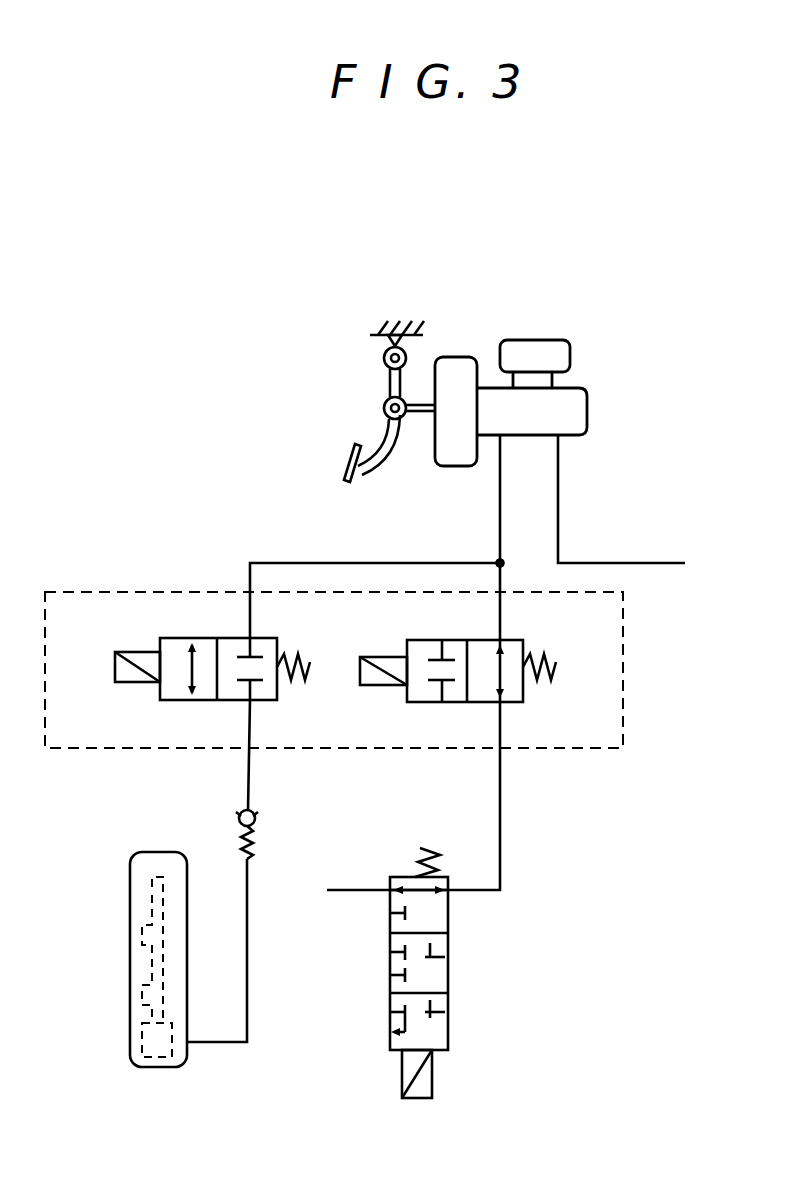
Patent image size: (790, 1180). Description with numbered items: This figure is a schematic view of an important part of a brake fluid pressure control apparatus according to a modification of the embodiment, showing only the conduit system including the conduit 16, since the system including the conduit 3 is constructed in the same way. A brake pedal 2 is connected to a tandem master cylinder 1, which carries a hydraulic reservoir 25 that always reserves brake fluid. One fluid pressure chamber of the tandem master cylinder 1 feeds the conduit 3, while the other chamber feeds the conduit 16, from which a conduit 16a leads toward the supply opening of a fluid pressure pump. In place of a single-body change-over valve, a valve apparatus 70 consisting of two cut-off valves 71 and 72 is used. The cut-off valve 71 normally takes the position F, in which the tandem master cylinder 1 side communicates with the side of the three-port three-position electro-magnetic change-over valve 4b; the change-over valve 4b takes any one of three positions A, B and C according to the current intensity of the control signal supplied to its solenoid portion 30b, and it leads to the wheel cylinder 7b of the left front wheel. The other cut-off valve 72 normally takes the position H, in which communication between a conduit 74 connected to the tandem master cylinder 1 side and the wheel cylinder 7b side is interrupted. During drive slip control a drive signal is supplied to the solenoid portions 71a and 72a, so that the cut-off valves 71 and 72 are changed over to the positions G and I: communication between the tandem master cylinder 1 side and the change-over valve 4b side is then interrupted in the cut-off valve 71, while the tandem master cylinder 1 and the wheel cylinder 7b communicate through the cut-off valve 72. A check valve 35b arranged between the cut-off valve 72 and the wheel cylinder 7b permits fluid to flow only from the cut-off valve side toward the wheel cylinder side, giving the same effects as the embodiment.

The tandem master cylinder 1 is at (578, 371).
The brake pedal 2 is at (347, 457).
The conduit 3 is at (560, 505).
The conduit 16 is at (500, 509).
The conduit 16a is at (498, 820).
The hydraulic reservoir 25 is at (530, 350).
The conduit 74 is at (326, 562).
The valve apparatus 70 is at (629, 646).
The cut-off valve 71 is at (500, 651).
The solenoid portion 71a is at (380, 679).
The cut-off valve 72 is at (250, 650).
The solenoid portion 72a is at (134, 677).
The check valve 35b is at (257, 817).
The wheel cylinder 7b is at (170, 1045).
The three-port three-position electro-magnetic change-over valve 4b is at (434, 949).
The solenoid portion 30b is at (437, 1075).
The position I is at (178, 640).
The position H is at (233, 645).
The position G is at (432, 640).
The position F is at (480, 640).
The position A is at (390, 910).
The position B is at (390, 963).
The position C is at (390, 1015).